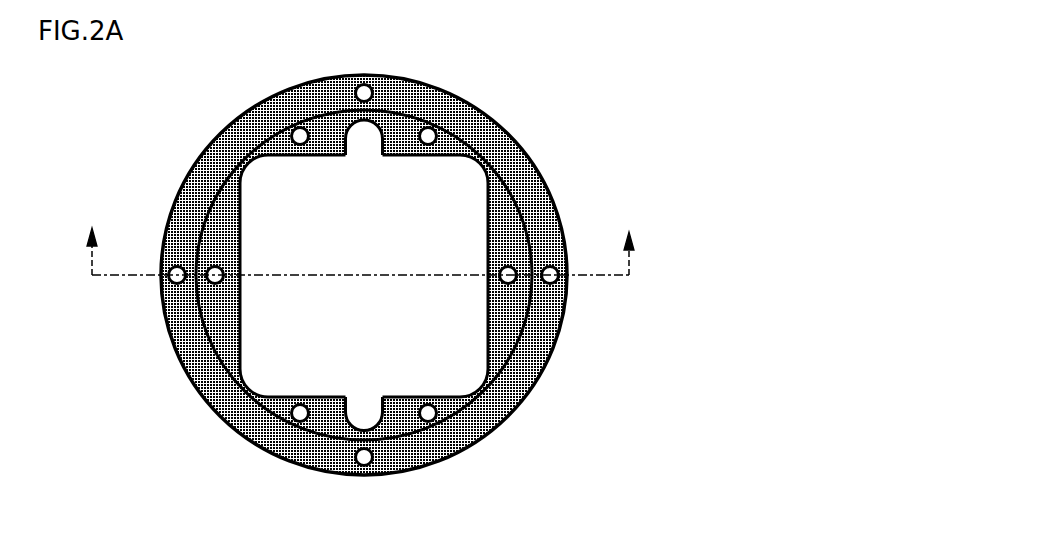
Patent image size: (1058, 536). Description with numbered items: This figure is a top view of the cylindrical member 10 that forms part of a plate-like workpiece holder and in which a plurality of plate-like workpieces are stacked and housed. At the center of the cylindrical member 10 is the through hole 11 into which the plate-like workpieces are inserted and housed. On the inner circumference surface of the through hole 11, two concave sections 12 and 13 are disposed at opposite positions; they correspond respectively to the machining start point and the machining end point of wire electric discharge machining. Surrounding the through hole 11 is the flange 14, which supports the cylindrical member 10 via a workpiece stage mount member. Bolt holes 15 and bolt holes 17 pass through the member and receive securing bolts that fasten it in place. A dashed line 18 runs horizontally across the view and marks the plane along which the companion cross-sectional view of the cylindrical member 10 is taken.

The cylindrical member 10 is at (418, 80).
The through hole 11 is at (445, 175).
The concave section 12 is at (362, 437).
The concave section 13 is at (363, 147).
The flange 14 is at (533, 183).
The bolt holes 15 is at (512, 282).
The bolt holes 17 is at (550, 262).
The dashed line 18 is at (628, 268).